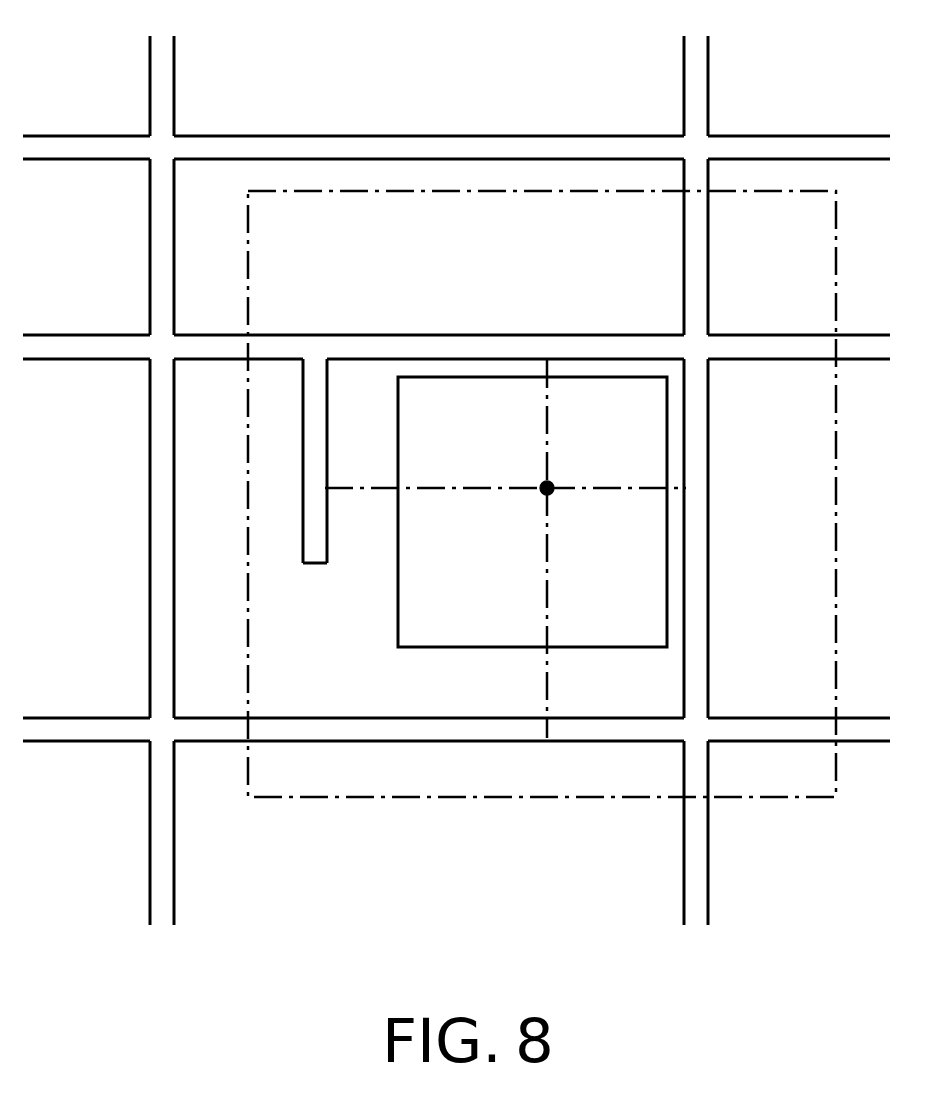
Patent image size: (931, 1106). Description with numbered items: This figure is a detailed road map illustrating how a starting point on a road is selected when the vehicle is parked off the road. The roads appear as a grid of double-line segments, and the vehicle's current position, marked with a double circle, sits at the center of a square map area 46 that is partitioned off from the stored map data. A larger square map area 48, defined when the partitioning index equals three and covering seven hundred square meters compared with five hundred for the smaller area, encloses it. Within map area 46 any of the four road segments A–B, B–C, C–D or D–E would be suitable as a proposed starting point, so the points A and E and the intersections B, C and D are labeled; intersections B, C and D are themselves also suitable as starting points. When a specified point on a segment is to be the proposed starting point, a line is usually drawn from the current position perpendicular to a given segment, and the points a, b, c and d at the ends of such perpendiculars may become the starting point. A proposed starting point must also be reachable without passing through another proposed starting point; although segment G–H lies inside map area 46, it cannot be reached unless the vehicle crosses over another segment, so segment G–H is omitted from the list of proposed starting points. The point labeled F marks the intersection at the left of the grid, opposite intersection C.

The map area 46 is at (425, 648).
The map area 48 is at (322, 797).
The point A is at (329, 576).
The intersection B is at (317, 348).
The intersection C is at (703, 345).
The intersection D is at (697, 728).
The point E is at (157, 732).
The grid intersection F is at (158, 350).
The point G is at (160, 145).
The point H is at (697, 145).
The point a is at (318, 487).
The point b is at (548, 345).
The point c is at (701, 487).
The point d is at (547, 728).